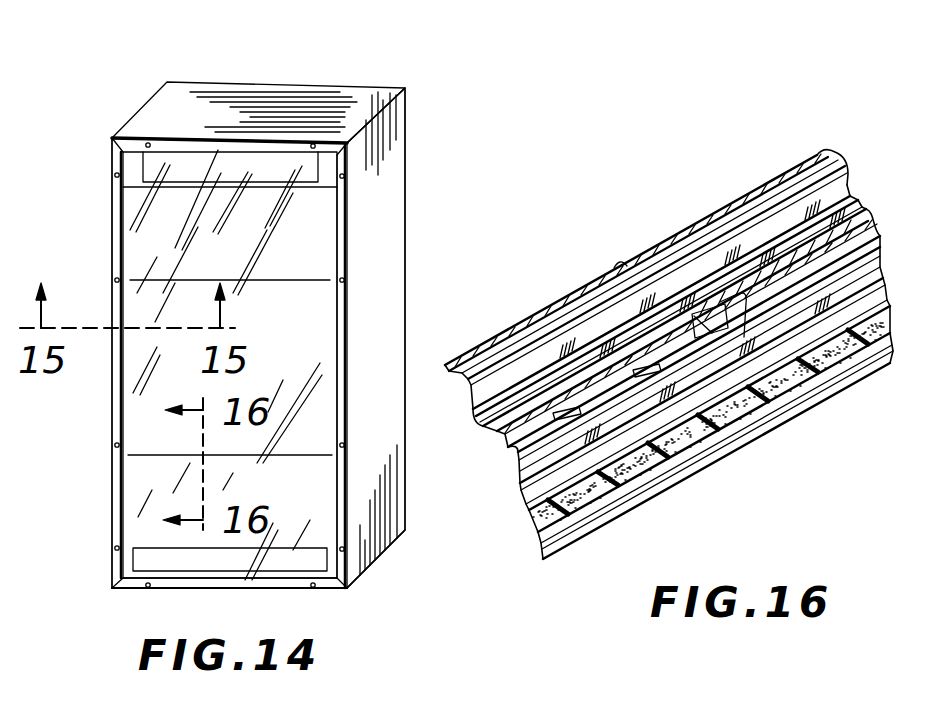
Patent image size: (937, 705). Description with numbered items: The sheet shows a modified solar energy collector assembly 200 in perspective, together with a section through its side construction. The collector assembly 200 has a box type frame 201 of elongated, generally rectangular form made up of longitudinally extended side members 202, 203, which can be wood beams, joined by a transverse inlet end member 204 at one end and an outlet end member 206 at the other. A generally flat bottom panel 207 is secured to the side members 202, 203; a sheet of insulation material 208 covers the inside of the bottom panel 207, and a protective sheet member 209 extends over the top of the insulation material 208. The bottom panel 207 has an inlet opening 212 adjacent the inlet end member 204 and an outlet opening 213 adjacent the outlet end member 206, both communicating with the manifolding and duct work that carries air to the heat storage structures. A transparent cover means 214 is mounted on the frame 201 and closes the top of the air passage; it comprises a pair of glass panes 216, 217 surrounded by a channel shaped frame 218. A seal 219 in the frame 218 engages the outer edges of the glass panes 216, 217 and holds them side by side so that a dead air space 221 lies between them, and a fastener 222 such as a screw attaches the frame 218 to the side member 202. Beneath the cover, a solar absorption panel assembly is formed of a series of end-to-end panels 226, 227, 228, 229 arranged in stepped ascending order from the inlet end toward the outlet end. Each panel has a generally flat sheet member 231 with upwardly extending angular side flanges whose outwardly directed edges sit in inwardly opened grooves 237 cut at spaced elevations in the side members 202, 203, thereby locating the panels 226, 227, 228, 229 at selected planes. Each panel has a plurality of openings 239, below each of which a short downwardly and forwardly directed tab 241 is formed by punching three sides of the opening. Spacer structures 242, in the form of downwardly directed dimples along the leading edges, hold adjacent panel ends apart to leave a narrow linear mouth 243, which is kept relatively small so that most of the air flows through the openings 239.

In FIG. 14, the collector assembly 200 is at (425, 75).
In FIG. 14, the box type frame 201 is at (363, 270).
In FIG. 14, the side member 202 is at (112, 237).
In FIG. 16, the side member 202 is at (530, 500).
In FIG. 14, the side member 203 is at (382, 162).
In FIG. 14, the inlet end member 204 is at (325, 593).
In FIG. 14, the outlet end member 206 is at (233, 103).
In FIG. 16, the bottom panel 207 is at (592, 530).
In FIG. 16, the insulation material 208 is at (562, 545).
In FIG. 16, the protective sheet member 209 is at (537, 530).
In FIG. 14, the inlet opening 212 is at (125, 592).
In FIG. 14, the outlet opening 213 is at (143, 170).
In FIG. 14, the transparent cover means 214 is at (165, 473).
In FIG. 14, the glass pane 216 is at (140, 530).
In FIG. 16, the glass pane 216 is at (747, 200).
In FIG. 16, the glass pane 217 is at (810, 160).
In FIG. 14, the frame 218 is at (115, 418).
In FIG. 16, the frame 218 is at (798, 162).
In FIG. 16, the seal 219 is at (846, 160).
In FIG. 16, the dead air space 221 is at (687, 253).
In FIG. 14, the fastener 222 is at (148, 142).
In FIG. 16, the fastener 222 is at (613, 266).
In FIG. 14, the panel 226 is at (307, 510).
In FIG. 14, the panel 227 is at (293, 440).
In FIG. 14, the panel 228 is at (298, 345).
In FIG. 14, the panel 229 is at (287, 235).
In FIG. 16, the sheet member 231 is at (628, 470).
In FIG. 16, the groove 237 is at (852, 192).
In FIG. 16, the opening 239 is at (645, 370).
In FIG. 16, the tab 241 is at (740, 335).
In FIG. 16, the spacer structure 242 is at (757, 438).
In FIG. 16, the mouth 243 is at (857, 240).